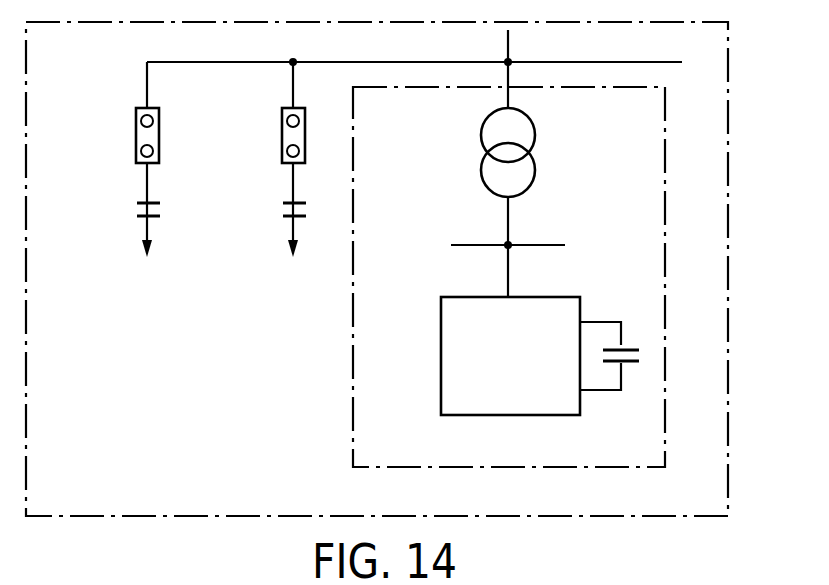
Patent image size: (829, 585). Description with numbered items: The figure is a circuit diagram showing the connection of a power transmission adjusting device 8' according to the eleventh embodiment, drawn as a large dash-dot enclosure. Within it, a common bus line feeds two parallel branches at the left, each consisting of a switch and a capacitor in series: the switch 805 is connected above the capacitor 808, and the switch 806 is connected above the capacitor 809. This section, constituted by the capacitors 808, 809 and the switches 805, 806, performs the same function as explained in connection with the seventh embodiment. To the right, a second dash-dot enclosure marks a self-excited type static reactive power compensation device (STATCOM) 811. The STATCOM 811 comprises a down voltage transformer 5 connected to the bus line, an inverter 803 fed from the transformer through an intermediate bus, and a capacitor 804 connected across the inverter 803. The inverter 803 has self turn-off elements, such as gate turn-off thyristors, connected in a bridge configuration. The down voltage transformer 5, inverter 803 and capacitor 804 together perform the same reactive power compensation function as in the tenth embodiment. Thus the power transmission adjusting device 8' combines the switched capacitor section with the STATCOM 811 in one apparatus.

The power transmission adjusting device 8' is at (406, 269).
The self-excited type static reactive power compensation device 811 is at (353, 410).
The down voltage transformer 5 is at (540, 147).
The inverter 803 is at (438, 357).
The capacitor 804 is at (630, 340).
The switch 805 is at (131, 140).
The switch 806 is at (278, 140).
The capacitor 808 is at (131, 213).
The capacitor 809 is at (278, 213).